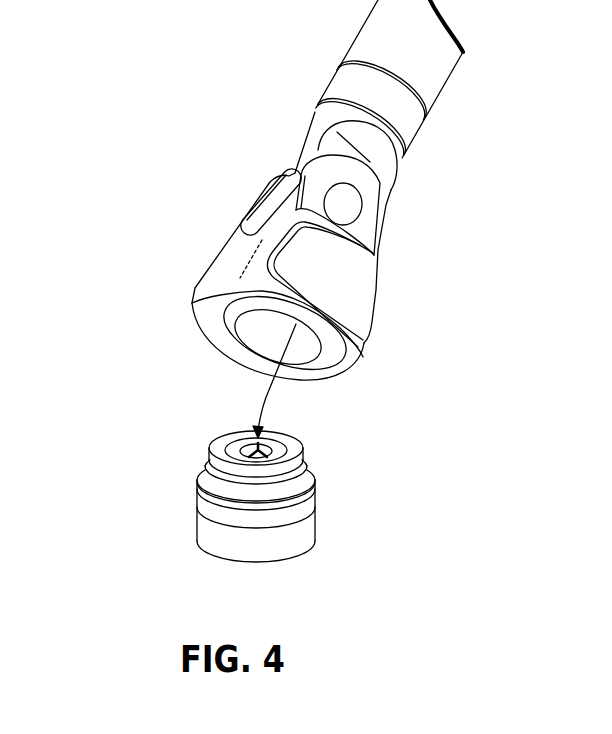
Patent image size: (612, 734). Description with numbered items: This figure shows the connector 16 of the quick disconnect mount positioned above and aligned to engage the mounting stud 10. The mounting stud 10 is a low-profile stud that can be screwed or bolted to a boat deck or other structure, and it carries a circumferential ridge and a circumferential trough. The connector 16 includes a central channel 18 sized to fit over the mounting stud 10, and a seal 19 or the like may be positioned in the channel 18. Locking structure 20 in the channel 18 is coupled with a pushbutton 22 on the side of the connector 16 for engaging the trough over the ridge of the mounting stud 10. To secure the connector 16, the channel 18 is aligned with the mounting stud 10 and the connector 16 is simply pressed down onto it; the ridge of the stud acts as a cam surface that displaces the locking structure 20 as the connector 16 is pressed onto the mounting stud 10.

The mounting stud 10 is at (181, 490).
The connector 16 is at (275, 229).
The central channel 18 is at (295, 379).
The seal 19 is at (273, 348).
The locking structure 20 is at (267, 333).
The pushbutton 22 is at (340, 273).